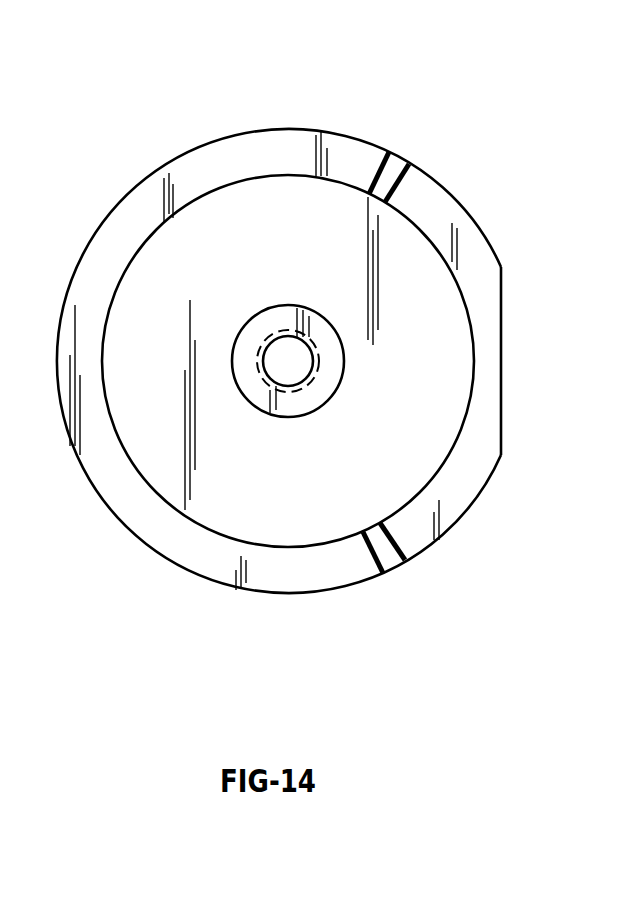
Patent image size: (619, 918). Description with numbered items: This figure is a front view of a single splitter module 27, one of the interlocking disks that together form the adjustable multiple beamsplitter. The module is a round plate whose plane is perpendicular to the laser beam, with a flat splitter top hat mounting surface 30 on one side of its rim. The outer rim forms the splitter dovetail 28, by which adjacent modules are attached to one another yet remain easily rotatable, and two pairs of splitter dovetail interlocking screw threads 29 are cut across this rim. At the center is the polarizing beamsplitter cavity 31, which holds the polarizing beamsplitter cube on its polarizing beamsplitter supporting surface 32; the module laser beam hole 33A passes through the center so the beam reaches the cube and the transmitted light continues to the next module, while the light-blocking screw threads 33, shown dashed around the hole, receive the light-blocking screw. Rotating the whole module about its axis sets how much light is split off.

The splitter module 27 is at (178, 156).
The splitter dovetail 28 is at (253, 176).
The splitter dovetail interlocking screw threads 29 is at (410, 175).
The splitter top hat mounting surface 30 is at (503, 327).
The polarizing beamsplitter cavity 31 is at (258, 327).
The polarizing beamsplitter supporting surface 32 is at (262, 398).
The light-blocking screw threads 33 is at (262, 378).
The module laser beam hole 33A is at (295, 349).